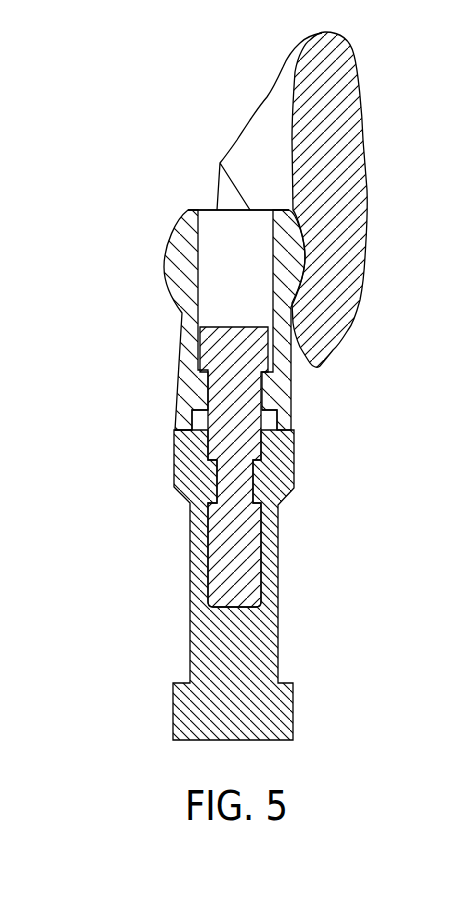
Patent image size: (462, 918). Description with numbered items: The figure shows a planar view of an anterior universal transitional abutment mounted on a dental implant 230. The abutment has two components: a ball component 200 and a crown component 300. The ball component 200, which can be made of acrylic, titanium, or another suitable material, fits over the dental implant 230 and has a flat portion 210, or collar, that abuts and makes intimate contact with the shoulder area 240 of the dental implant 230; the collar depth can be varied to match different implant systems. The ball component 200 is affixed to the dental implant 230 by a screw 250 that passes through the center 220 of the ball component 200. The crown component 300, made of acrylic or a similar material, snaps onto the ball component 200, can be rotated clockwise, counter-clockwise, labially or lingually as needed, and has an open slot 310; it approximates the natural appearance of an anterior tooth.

The ball component 200 is at (182, 352).
The flat portion 210 is at (178, 428).
The center 220 is at (202, 210).
The dental implant 230 is at (293, 445).
The shoulder area 240 is at (293, 431).
The screw 250 is at (222, 390).
The crown component 300 is at (363, 80).
The open slot 310 is at (218, 170).